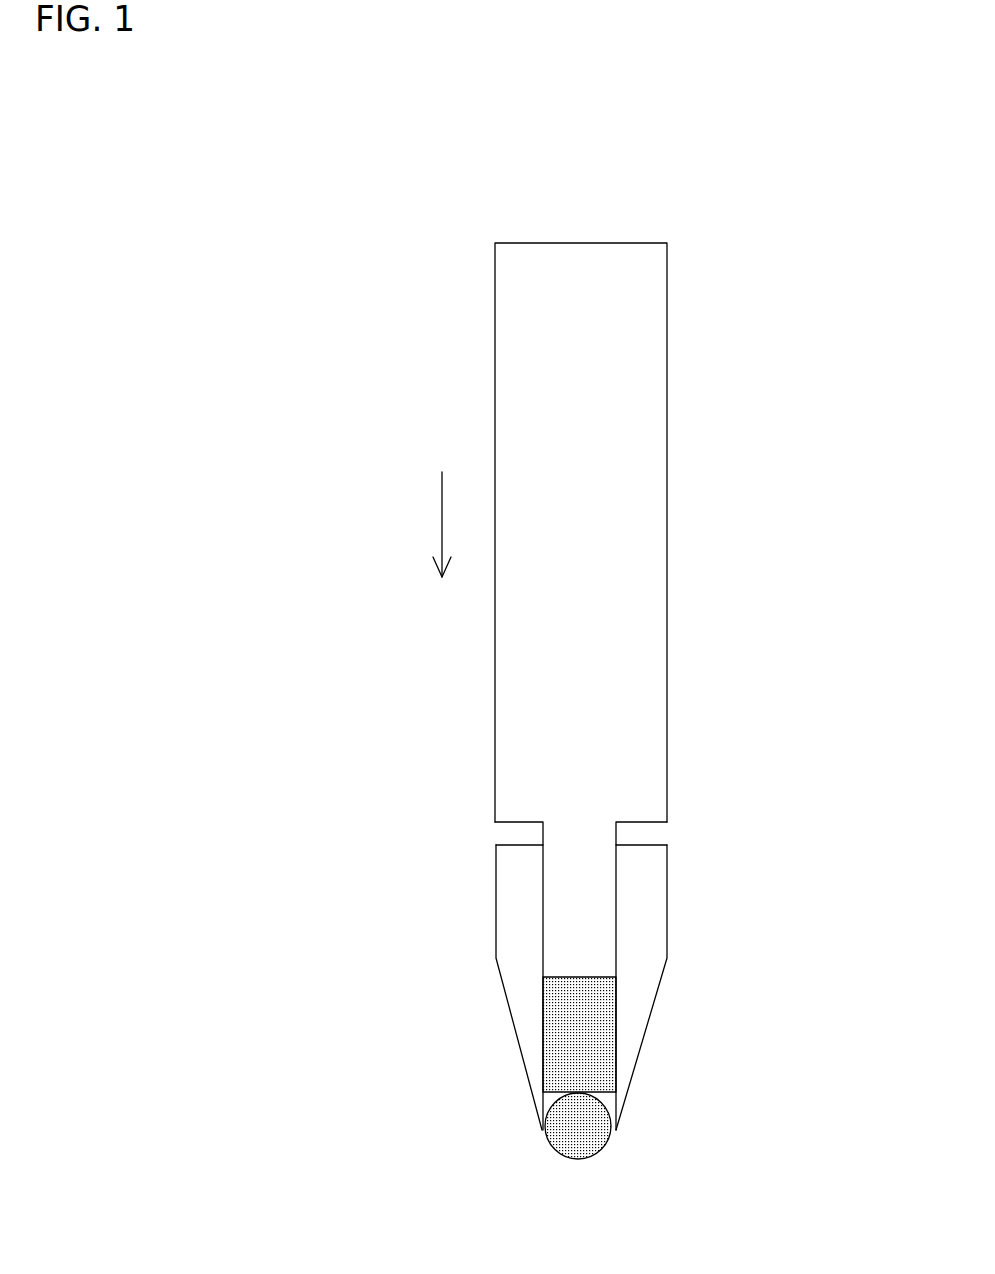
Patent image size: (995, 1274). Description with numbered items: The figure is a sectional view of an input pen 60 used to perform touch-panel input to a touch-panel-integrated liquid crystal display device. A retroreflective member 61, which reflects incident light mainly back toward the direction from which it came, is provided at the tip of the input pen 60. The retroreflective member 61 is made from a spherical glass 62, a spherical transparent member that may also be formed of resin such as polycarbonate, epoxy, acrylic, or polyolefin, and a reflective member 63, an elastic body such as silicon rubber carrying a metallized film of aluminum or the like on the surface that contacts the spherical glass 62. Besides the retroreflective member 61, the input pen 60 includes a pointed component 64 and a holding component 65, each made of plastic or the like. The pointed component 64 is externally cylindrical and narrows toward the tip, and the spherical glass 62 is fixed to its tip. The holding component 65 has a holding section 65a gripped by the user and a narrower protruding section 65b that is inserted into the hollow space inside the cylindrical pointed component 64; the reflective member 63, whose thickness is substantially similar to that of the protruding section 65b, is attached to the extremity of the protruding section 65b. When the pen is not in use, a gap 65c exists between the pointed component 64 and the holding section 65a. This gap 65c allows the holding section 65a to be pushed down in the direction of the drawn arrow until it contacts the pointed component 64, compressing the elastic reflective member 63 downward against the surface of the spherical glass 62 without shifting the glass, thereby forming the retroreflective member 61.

The input pen 60 is at (788, 432).
The retroreflective member 61 is at (718, 1008).
The spherical glass 62 is at (598, 1128).
The reflective member 63 is at (605, 1027).
The pointed component 64 is at (657, 884).
The holding component 65 is at (510, 808).
The holding section 65a is at (678, 243).
The protruding section 65b is at (495, 830).
The gap 65c is at (668, 835).